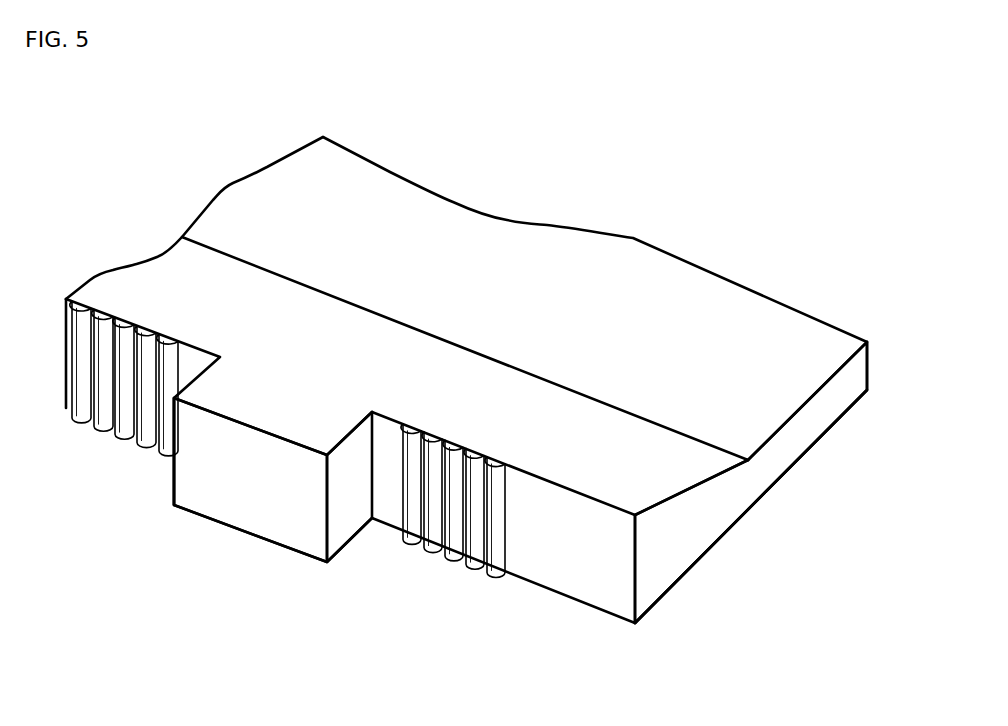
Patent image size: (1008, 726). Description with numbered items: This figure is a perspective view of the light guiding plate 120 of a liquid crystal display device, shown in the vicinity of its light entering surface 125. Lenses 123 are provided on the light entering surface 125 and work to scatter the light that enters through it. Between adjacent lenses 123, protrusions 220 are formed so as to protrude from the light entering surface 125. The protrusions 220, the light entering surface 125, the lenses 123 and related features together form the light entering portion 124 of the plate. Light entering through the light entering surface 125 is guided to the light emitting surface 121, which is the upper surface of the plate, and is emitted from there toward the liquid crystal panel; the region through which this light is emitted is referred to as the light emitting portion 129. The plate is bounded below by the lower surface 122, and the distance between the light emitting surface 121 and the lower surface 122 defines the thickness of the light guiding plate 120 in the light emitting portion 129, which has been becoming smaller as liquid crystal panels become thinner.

The light guiding plate 120 is at (375, 593).
The light emitting surface 121 is at (537, 238).
The lower surface 122 is at (823, 437).
The lenses 123 is at (455, 553).
The light entering portion 124 is at (665, 540).
The light entering surface 125 is at (462, 445).
The light emitting portion 129 is at (650, 230).
The protrusions 220 is at (240, 493).